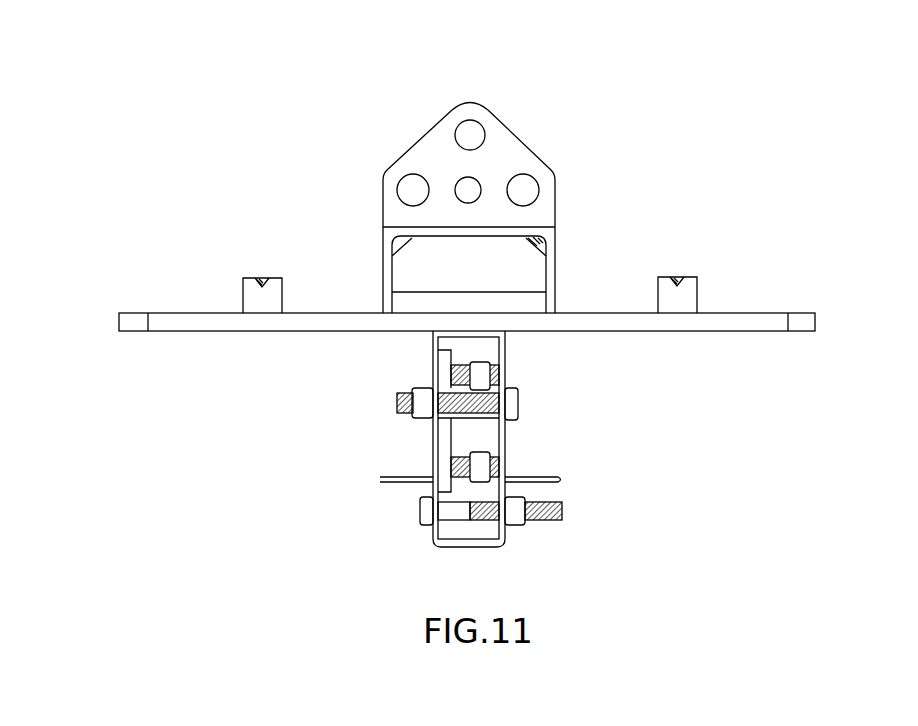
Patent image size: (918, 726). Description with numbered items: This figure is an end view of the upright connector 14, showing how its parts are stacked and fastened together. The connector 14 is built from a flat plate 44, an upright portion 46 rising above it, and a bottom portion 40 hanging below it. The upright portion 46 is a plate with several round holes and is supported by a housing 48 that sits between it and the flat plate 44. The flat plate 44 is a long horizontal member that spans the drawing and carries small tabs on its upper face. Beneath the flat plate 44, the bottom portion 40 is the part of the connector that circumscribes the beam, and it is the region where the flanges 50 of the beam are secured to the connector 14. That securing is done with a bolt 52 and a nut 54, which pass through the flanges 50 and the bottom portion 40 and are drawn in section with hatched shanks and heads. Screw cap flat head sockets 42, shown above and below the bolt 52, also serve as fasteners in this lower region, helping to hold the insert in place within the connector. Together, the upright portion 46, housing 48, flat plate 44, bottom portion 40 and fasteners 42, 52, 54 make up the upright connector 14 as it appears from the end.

The upright connector 14 is at (358, 189).
The bottom portion 40 is at (505, 380).
The screw cap flat head sockets 42 is at (466, 366).
The flat plate 44 is at (182, 313).
The upright portion 46 is at (503, 148).
The housing 48 is at (558, 262).
The flanges 50 is at (447, 432).
The bolt 52 is at (515, 415).
The nut 54 is at (424, 414).